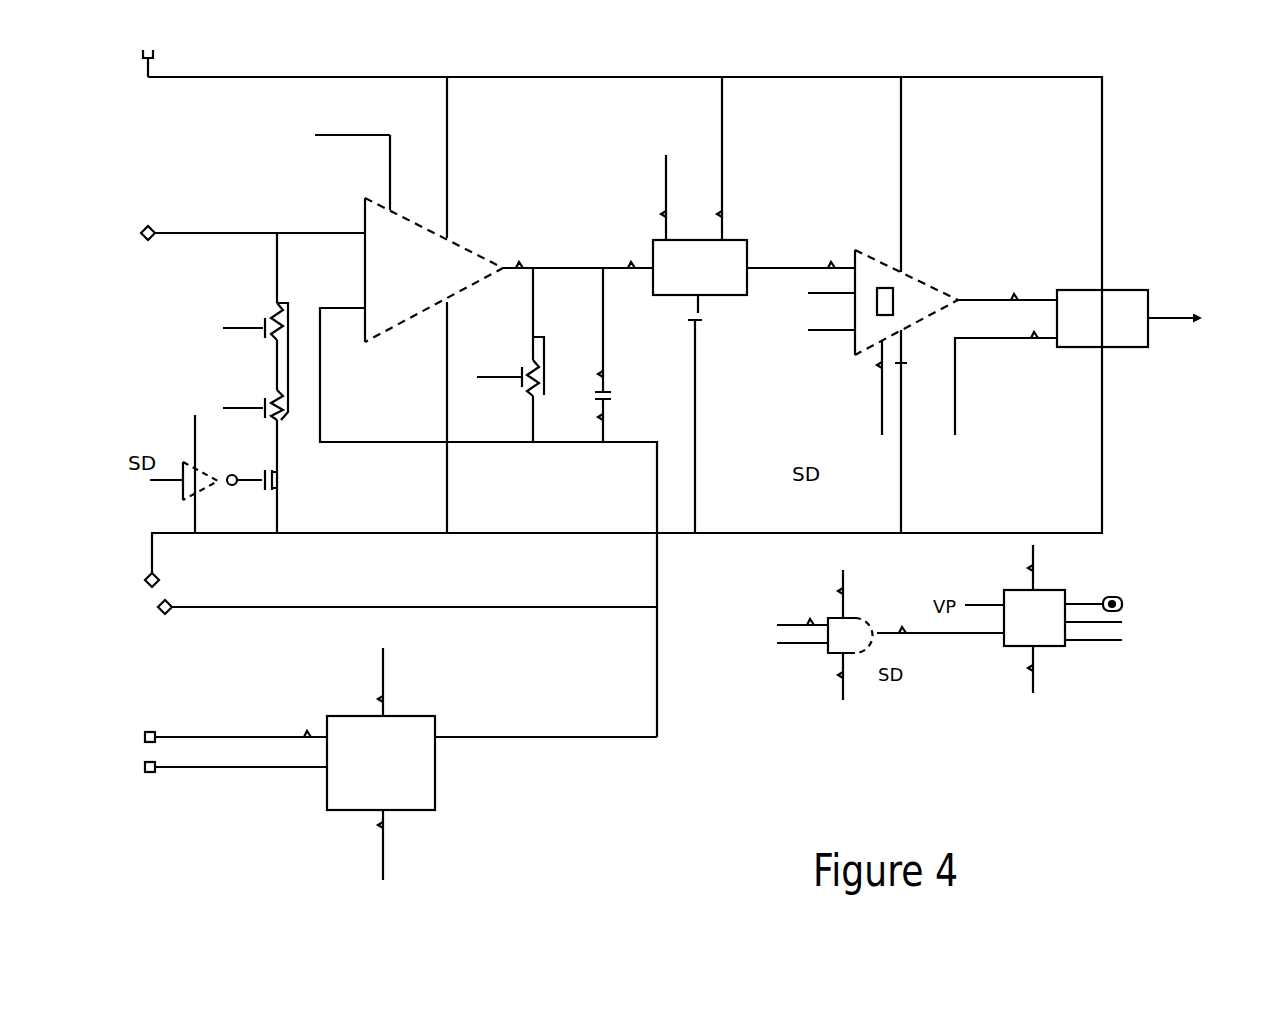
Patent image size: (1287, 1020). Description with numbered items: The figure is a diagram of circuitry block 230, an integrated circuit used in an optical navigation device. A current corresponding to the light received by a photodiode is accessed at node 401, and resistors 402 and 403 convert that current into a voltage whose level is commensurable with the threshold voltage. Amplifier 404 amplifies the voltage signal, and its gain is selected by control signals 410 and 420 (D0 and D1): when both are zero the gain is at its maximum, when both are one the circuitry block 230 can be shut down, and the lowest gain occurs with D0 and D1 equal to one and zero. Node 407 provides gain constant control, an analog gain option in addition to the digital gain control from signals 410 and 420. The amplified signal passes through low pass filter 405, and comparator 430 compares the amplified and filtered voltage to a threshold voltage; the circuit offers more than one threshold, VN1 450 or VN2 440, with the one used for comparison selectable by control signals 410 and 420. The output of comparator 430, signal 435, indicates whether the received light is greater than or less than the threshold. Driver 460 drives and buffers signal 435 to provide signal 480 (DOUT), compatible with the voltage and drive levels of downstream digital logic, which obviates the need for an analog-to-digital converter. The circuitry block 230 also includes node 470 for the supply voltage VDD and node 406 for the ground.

The circuitry block 230 is at (301, 39).
The node for the supply voltage VDD 470 is at (176, 137).
The node 401 is at (141, 245).
The resistor 402 is at (270, 302).
The resistor 403 is at (284, 427).
The amplifier 404 is at (455, 236).
The low pass filter 405 is at (745, 237).
The comparator 430 is at (922, 272).
The signal 435 is at (1020, 296).
The threshold voltage VN2 440 is at (760, 310).
The threshold voltage VN1 450 is at (786, 352).
The driver 460 is at (1135, 351).
The signal DOUT 480 is at (1164, 312).
The node for the ground 406 is at (146, 568).
The node for gain constant control 407 is at (157, 615).
The control signal D0 410 is at (158, 724).
The control signal D1 420 is at (158, 781).